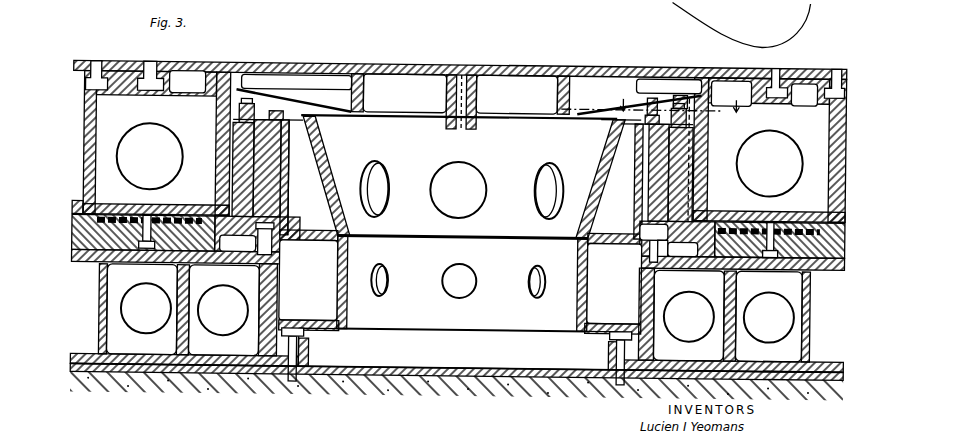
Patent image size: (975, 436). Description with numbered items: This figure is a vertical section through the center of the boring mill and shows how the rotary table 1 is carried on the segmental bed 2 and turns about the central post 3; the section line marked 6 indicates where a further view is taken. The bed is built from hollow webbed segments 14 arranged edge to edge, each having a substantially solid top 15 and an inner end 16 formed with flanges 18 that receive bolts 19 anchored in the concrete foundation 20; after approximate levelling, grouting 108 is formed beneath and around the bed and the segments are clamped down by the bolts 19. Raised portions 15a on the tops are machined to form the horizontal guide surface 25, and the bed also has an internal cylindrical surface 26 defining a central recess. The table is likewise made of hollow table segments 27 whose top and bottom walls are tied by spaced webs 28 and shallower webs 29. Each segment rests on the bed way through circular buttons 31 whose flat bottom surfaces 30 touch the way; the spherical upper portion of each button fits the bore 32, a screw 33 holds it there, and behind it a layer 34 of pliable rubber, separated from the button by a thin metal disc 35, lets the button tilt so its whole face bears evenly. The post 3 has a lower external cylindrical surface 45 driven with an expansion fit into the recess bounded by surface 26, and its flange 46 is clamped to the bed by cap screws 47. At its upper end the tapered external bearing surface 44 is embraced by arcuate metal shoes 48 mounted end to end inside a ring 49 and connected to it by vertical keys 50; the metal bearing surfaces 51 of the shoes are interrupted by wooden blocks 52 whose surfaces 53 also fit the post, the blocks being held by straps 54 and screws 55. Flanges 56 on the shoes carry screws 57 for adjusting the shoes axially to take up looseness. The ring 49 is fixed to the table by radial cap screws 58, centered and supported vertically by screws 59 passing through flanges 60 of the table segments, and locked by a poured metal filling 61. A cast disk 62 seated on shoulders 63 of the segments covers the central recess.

The table 1 is at (818, 70).
The segmental bed 2 is at (672, 372).
The post 3 is at (345, 332).
The section line 6 is at (650, 98).
The segments 14 is at (104, 368).
The top 15 is at (813, 268).
The raised portions 15a is at (148, 262).
The inner end 16 is at (262, 296).
The flanges 18 is at (288, 378).
The bolts 19 is at (298, 380).
The concrete foundation 20 is at (380, 382).
The guide surface 25 is at (126, 266).
The internal cylindrical surface 26 is at (262, 312).
The table segments 27 is at (130, 66).
The webs 28 is at (96, 120).
The shallower webs 29 is at (162, 100).
The bottom surfaces 30 is at (222, 250).
The circular buttons 31 is at (92, 268).
The bore 32 is at (208, 215).
The screw 33 is at (150, 212).
The layer 34 is at (140, 225).
The metal disc 35 is at (137, 266).
The external bearing surface 44 is at (283, 190).
The external cylindrical surface 45 is at (290, 285).
The flange 46 is at (290, 263).
The cap screws 47 is at (290, 222).
The arcuate metal shoes 48 is at (250, 150).
The ring 49 is at (240, 135).
The vertical keys 50 is at (640, 216).
The bearing surfaces 51 is at (292, 205).
The wooden blocks 52 is at (305, 106).
The surfaces 53 is at (605, 160).
The straps 54 is at (605, 130).
The screws 55 is at (648, 76).
The flanges 56 is at (700, 76).
The screws 57 is at (688, 96).
The cap screws 58 is at (232, 131).
The screws 59 is at (678, 242).
The flanges 60 is at (296, 236).
The filling 61 is at (262, 164).
The cast disk 62 is at (296, 75).
The shoulders 63 is at (212, 100).
The grouting 108 is at (194, 368).